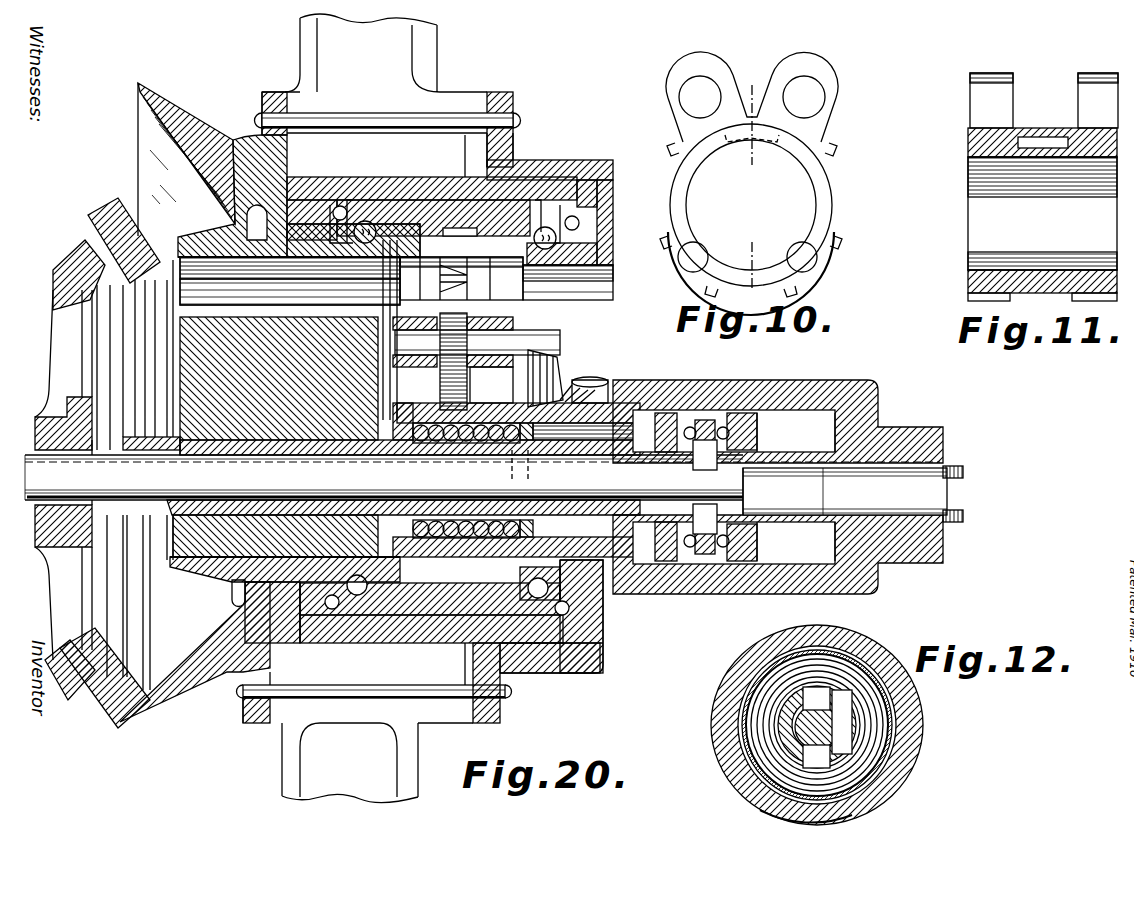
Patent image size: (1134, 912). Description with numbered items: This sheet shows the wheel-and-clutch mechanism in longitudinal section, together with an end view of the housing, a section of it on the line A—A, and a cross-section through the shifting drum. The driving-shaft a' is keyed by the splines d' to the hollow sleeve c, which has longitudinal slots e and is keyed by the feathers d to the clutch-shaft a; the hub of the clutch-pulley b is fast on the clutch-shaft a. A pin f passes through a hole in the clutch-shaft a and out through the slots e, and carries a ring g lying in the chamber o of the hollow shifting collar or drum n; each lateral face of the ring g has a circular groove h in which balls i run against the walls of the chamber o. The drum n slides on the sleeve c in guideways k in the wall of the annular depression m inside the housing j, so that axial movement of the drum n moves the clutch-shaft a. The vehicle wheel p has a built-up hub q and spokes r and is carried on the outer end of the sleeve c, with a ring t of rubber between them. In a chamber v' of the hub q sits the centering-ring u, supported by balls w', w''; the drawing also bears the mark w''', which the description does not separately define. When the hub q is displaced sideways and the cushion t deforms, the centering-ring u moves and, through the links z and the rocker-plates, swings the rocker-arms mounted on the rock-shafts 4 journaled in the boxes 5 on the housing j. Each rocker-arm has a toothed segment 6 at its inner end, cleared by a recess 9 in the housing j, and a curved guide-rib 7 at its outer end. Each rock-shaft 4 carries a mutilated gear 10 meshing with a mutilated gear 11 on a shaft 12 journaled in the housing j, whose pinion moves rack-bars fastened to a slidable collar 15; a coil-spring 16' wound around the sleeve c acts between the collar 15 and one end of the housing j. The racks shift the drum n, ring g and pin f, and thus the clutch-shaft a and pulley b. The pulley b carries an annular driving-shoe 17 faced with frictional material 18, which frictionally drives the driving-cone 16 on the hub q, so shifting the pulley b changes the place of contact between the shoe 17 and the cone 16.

In FIG. 20, the spokes r is at (420, 65).
In FIG. 20, the driving-cone 16 is at (195, 406).
In FIG. 20, the coil-spring 16' is at (392, 620).
In FIG. 20, the annular driving-shoe 17 is at (95, 228).
In FIG. 20, the frictional material 18 is at (102, 222).
In FIG. 20, the balls w' is at (460, 403).
In FIG. 20, the balls w'' is at (487, 365).
In FIG. 20, the pin rod w''' is at (379, 419).
In FIG. 20, the centering-ring u is at (418, 200).
In FIG. 20, the chamber v' is at (431, 411).
In FIG. 20, the built-up hub q is at (524, 162).
In FIG. 20, the vehicle wheel p is at (605, 164).
In FIG. 20, the links z is at (400, 292).
In FIG. 20, the ring of rubber t is at (293, 340).
In FIG. 20, the boxes 5 is at (395, 318).
In FIG. 10, the boxes 5 is at (672, 82).
In FIG. 11, the boxes 5 is at (1090, 90).
In FIG. 20, the rock-shafts 4 is at (477, 342).
In FIG. 20, the toothed segment 6 is at (447, 380).
In FIG. 20, the recess 9 is at (487, 382).
In FIG. 10, the recess 9 is at (772, 140).
In FIG. 11, the recess 9 is at (1048, 140).
In FIG. 20, the curved guide-rib 7 is at (455, 303).
In FIG. 20, the mutilated gear 10 is at (560, 362).
In FIG. 20, the mutilated gear 11 is at (556, 383).
In FIG. 20, the shaft 12 is at (603, 378).
In FIG. 20, the slidable collar 15 is at (528, 525).
In FIG. 20, the clutch-shaft a is at (471, 477).
In FIG. 12, the clutch-shaft a is at (886, 727).
In FIG. 20, the driving-shaft a' is at (869, 491).
In FIG. 20, the feathers d is at (152, 472).
In FIG. 20, the splines d' is at (971, 495).
In FIG. 20, the sleeve c is at (143, 440).
In FIG. 12, the sleeve c is at (880, 712).
In FIG. 20, the clutch-pulley b is at (50, 345).
In FIG. 20, the housing j is at (860, 382).
In FIG. 10, the housing j is at (834, 192).
In FIG. 11, the housing j is at (966, 222).
In FIG. 12, the housing j is at (855, 650).
In FIG. 20, the annular depression m is at (800, 412).
In FIG. 20, the balls i is at (705, 490).
In FIG. 20, the longitudinal slots e is at (773, 487).
In FIG. 12, the longitudinal slots e is at (778, 706).
In FIG. 20, the guideways k is at (818, 470).
In FIG. 12, the guideways k is at (818, 652).
In FIG. 20, the chamber o is at (692, 428).
In FIG. 12, the chamber o is at (860, 700).
In FIG. 20, the ring g is at (705, 420).
In FIG. 12, the ring g is at (775, 775).
In FIG. 20, the circular groove h is at (725, 428).
In FIG. 12, the circular groove h is at (848, 690).
In FIG. 20, the shifting collar n is at (745, 413).
In FIG. 12, the shifting collar n is at (770, 732).
In FIG. 20, the pin f is at (700, 505).
In FIG. 12, the pin f is at (805, 692).
In FIG. 10, the section line A— A is at (757, 185).